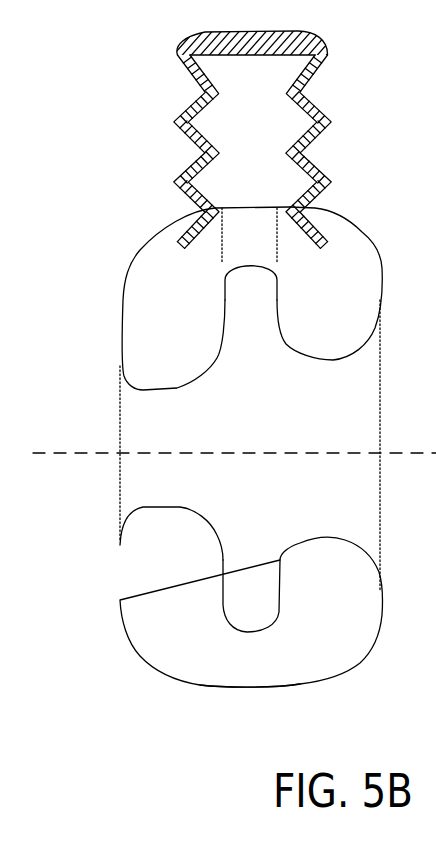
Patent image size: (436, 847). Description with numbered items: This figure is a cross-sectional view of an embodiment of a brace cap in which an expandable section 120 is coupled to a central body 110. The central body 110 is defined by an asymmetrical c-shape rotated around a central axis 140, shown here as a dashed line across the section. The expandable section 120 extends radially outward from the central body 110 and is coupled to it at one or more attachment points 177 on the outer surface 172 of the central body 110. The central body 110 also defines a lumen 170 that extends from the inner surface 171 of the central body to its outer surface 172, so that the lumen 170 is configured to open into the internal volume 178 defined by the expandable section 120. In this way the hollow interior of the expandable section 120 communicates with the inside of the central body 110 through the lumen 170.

The central body 110 is at (193, 475).
The expandable section 120 is at (237, 137).
The central axis 140 is at (88, 452).
The lumen 170 is at (252, 279).
The inner surface 171 is at (253, 630).
The outer surface 172 is at (263, 690).
The attachment points 177 is at (312, 212).
The internal volume 178 is at (263, 138).